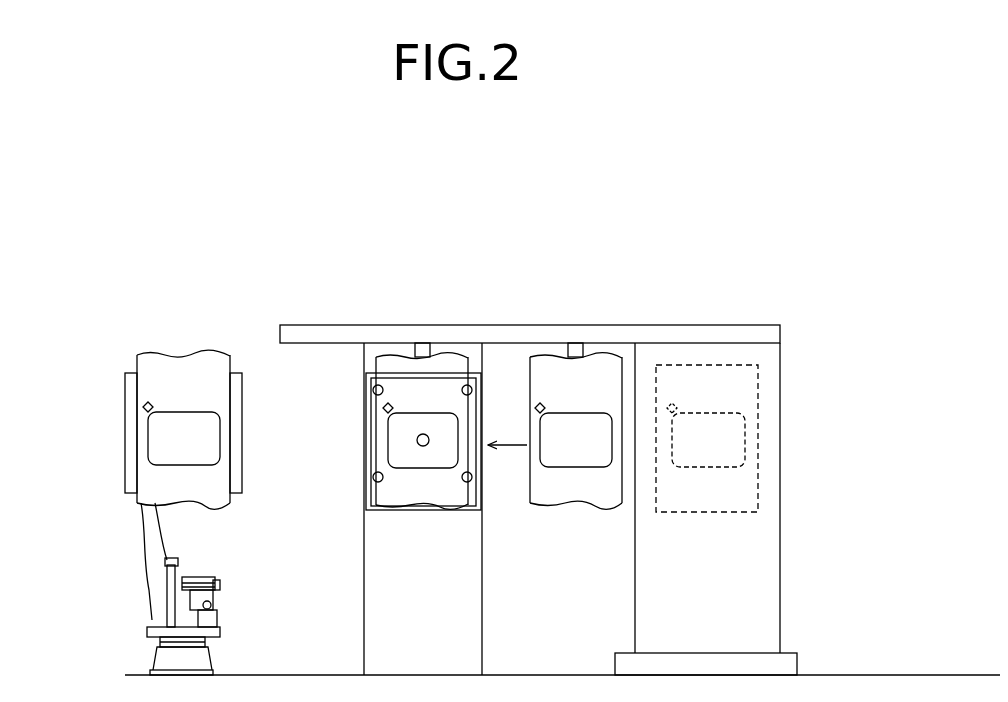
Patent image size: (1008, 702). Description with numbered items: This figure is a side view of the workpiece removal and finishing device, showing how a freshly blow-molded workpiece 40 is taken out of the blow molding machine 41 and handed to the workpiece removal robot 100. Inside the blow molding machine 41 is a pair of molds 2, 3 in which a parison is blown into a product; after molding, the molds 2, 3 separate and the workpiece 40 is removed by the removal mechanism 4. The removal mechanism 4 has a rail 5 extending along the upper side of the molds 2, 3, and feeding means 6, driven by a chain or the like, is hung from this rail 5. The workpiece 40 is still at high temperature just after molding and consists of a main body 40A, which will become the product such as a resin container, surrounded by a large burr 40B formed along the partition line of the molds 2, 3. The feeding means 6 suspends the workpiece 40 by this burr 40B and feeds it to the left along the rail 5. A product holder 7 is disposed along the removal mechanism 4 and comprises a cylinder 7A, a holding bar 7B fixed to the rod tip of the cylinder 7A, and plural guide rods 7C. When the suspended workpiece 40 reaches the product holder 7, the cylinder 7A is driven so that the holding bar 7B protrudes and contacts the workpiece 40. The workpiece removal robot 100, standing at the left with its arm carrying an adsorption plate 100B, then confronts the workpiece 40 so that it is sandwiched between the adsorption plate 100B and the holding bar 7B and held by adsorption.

The mold 2 is at (748, 438).
The mold 3 is at (748, 479).
The removal mechanism 4 is at (728, 318).
The rail 5 is at (660, 336).
The feeding means 6 is at (575, 345).
The product holder 7 is at (362, 362).
The cylinder 7A is at (418, 436).
The holding bar 7B is at (373, 439).
The guide rod 7C is at (374, 388).
The workpiece 40 is at (85, 302).
The main body 40A is at (172, 420).
The burr 40B is at (150, 375).
The blow molding machine 41 is at (795, 380).
The workpiece removal robot 100 is at (137, 574).
The adsorption plate 100B is at (125, 403).